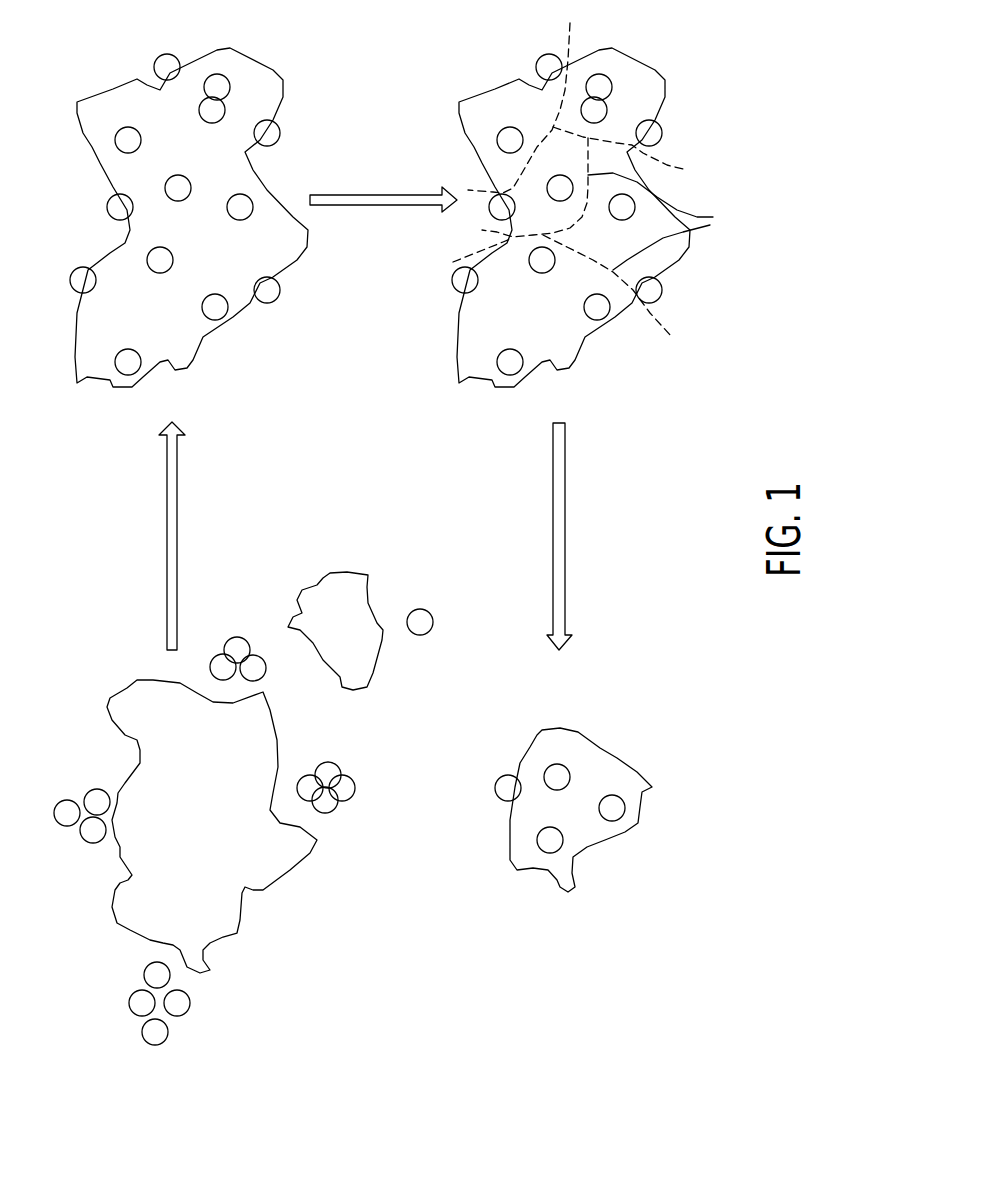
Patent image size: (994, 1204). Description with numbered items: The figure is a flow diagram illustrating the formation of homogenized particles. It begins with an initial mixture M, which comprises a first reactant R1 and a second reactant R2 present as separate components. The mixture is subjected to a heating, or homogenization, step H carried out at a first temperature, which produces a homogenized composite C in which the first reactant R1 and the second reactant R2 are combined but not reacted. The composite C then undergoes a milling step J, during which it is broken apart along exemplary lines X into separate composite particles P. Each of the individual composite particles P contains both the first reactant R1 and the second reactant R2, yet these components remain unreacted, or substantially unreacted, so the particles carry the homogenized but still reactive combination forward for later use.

The homogenized composite C is at (376, 205).
The exemplary lines X is at (713, 227).
The heating step H is at (157, 536).
The milling step J is at (542, 536).
The first reactant R1 is at (335, 565).
The second reactant R2 is at (420, 598).
The initial mixture M is at (204, 841).
The composite particles P is at (573, 810).